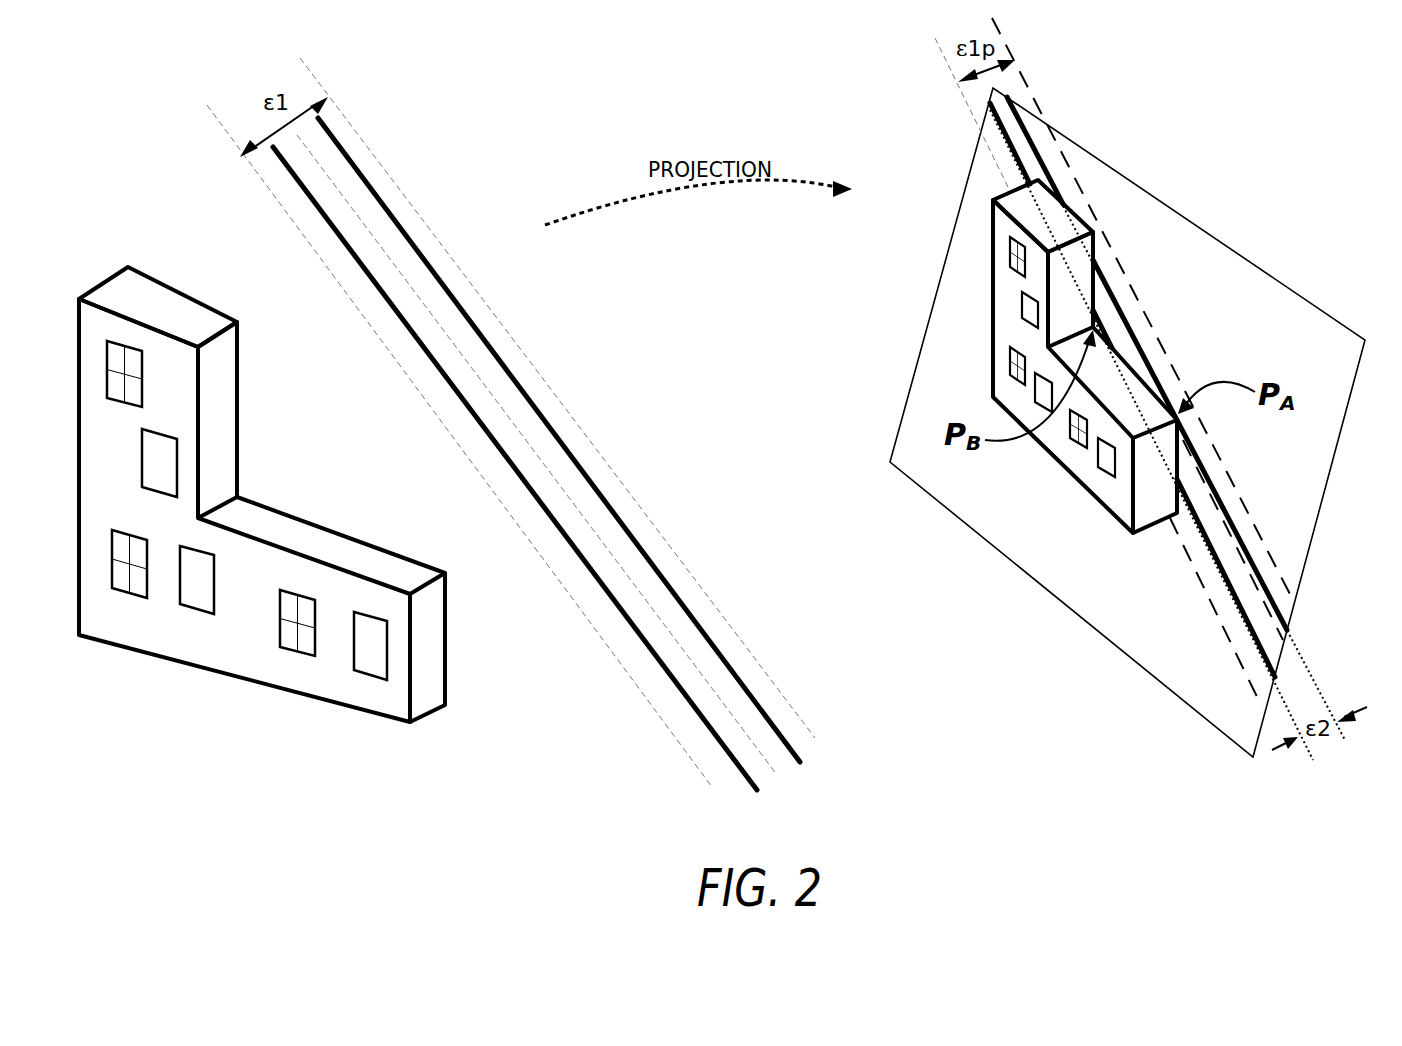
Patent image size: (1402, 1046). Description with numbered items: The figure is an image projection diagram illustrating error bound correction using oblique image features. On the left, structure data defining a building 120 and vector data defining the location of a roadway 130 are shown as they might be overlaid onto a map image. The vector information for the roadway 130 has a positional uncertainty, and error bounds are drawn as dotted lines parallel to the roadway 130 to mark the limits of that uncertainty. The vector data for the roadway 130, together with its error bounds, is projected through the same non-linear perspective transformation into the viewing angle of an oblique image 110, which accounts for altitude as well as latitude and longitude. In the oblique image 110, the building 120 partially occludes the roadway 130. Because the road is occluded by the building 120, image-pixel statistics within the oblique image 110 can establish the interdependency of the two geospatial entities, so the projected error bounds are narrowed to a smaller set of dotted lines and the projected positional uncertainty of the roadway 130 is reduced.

The oblique image 110 is at (1350, 357).
The building 120 is at (449, 627).
The roadway 130 is at (405, 330).